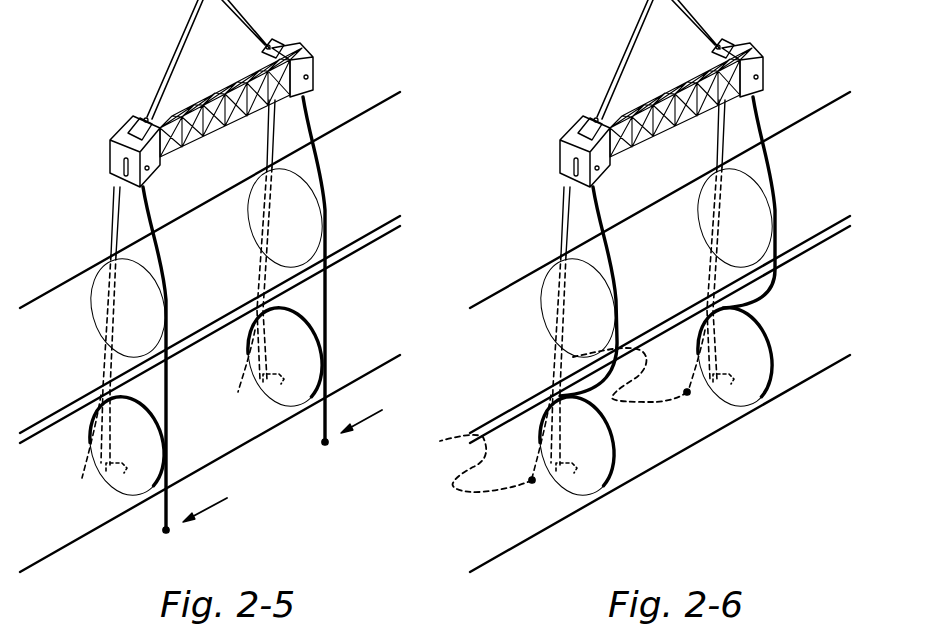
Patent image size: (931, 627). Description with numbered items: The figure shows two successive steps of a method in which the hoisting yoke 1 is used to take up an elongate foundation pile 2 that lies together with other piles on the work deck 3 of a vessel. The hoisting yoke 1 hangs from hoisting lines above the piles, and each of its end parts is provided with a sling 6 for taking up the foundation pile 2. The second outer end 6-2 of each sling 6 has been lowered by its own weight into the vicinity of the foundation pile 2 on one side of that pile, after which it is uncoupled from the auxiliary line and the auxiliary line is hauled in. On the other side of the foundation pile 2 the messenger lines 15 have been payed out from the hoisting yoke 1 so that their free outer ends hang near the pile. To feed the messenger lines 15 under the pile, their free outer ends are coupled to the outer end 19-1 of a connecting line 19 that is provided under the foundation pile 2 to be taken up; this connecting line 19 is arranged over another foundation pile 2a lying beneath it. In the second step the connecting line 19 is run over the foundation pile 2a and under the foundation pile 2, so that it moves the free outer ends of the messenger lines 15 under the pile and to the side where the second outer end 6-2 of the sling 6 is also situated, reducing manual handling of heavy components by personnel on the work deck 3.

In FIG. 2-5, the hoisting yoke 1 is at (114, 104).
In FIG. 2-6, the hoisting yoke 1 is at (564, 104).
In FIG. 2-5, the foundation pile 2 is at (47, 308).
In FIG. 2-6, the foundation pile 2 is at (497, 308).
In FIG. 2-5, the another foundation pile 2a is at (43, 533).
In FIG. 2-5, the work deck 3 is at (360, 535).
In FIG. 2-6, the work deck 3 is at (808, 537).
In FIG. 2-5, the sling 6 is at (114, 232).
In FIG. 2-6, the sling 6 is at (628, 289).
In FIG. 2-5, the second outer end of sling 6-2 is at (113, 474).
In FIG. 2-6, the second outer end of sling 6-2 is at (572, 473).
In FIG. 2-5, the messenger line 15 is at (168, 434).
In FIG. 2-6, the messenger line 15 is at (667, 246).
In FIG. 2-5, the connecting line 19 is at (146, 412).
In FIG. 2-6, the connecting line 19 is at (611, 401).
In FIG. 2-5, the outer end of connecting line 19-1 is at (168, 531).
In FIG. 2-6, the outer end of connecting line 19-1 is at (532, 483).